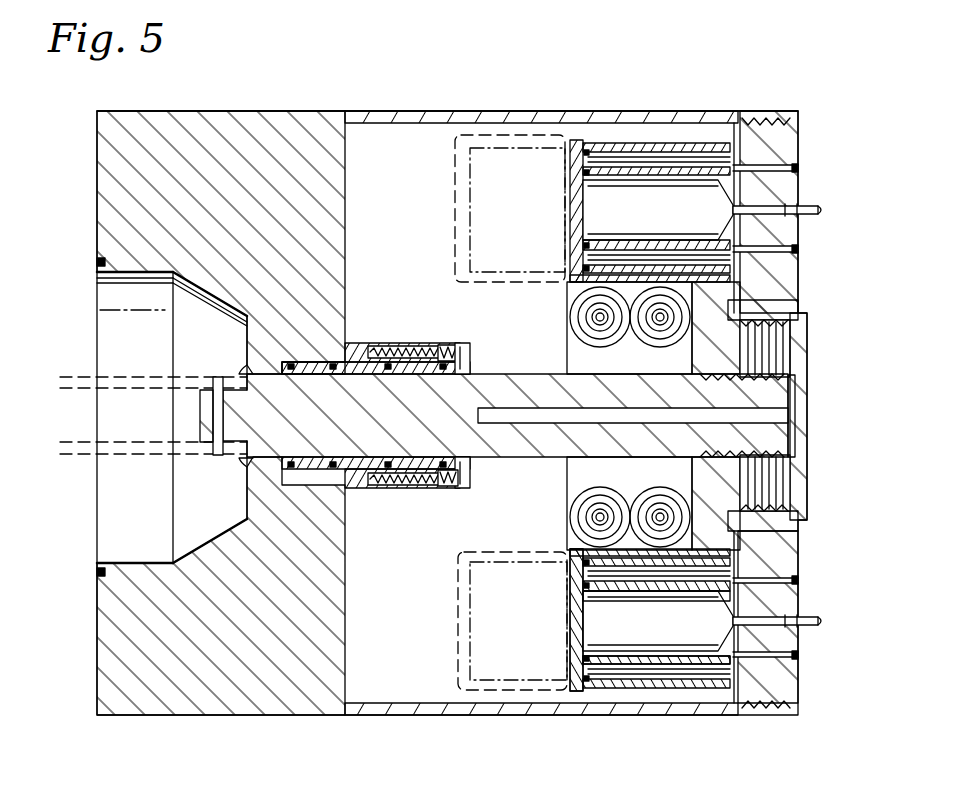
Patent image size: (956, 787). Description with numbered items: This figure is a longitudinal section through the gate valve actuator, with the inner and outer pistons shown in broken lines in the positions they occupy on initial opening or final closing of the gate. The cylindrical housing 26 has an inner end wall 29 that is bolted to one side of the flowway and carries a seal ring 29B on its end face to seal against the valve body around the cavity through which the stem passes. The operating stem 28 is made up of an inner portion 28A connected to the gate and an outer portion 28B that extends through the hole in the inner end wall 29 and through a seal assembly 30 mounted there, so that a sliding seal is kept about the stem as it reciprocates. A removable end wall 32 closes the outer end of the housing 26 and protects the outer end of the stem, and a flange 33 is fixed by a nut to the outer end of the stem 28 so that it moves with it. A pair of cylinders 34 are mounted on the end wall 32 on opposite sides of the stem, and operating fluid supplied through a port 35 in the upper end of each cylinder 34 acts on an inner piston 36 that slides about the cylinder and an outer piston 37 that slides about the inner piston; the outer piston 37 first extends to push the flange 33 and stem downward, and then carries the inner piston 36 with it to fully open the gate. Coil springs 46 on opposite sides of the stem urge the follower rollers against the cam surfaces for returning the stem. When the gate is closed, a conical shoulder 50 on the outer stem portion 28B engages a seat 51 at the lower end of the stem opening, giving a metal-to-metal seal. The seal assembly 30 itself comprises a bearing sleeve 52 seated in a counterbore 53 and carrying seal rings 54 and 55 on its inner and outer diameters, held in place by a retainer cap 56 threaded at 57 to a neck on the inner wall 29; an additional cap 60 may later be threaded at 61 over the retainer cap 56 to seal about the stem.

The cylindrical housing 26 is at (753, 107).
The operating stem 28 is at (514, 461).
The inner portion of the stem 28A is at (141, 466).
The outer portion of the stem 28B is at (673, 462).
The inner end wall 29 is at (244, 716).
The seal ring 29B is at (97, 573).
The seal assembly 30 is at (430, 490).
The end wall 32 is at (799, 143).
The flange 33 is at (727, 310).
The cylinders 34 is at (583, 652).
The port 35 is at (728, 207).
The inner piston 36 is at (583, 672).
The outer piston 37 is at (577, 577).
The coil springs 46 is at (578, 331).
The conical shoulder 50 is at (250, 478).
The seat 51 is at (243, 368).
The bearing sleeve 52 is at (357, 362).
The counterbore 53 is at (302, 362).
The seal rings 54 is at (388, 490).
The seal rings 55 is at (316, 362).
The retainer cap 56 is at (440, 344).
The threaded connection 57 is at (413, 355).
The cap 60 is at (460, 489).
The threads 61 is at (399, 346).